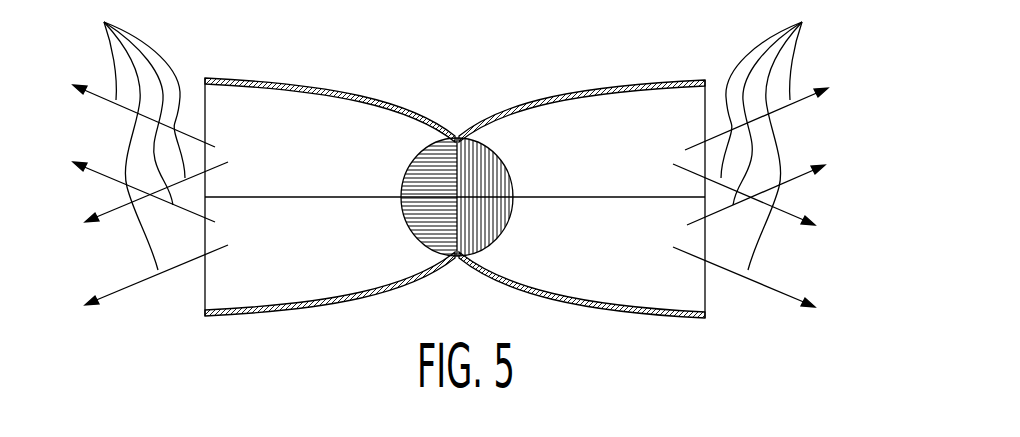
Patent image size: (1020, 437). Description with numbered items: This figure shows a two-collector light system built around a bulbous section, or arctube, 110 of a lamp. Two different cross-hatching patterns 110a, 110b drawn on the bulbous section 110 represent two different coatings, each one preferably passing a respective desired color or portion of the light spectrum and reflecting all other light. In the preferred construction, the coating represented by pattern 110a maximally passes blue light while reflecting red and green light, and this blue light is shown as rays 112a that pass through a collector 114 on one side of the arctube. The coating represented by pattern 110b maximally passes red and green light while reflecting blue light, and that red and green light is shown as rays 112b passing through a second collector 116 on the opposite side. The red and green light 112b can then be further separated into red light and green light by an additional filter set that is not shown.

The bulbous section 110 is at (461, 145).
The cross-hatching pattern 110a is at (408, 168).
The cross-hatching pattern 110b is at (482, 232).
The rays 112a is at (139, 152).
The rays 112b is at (765, 153).
The collector 114 is at (340, 88).
The collector 116 is at (587, 88).